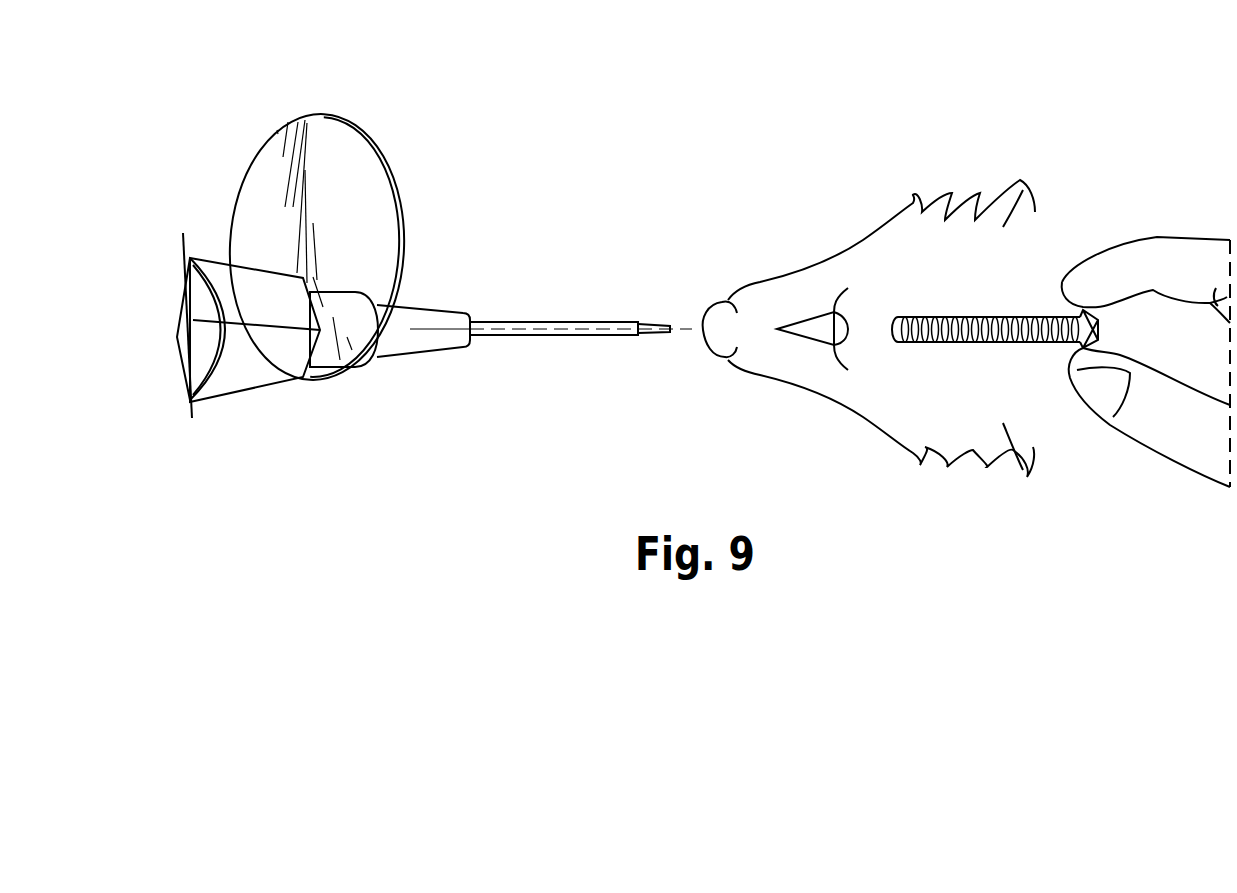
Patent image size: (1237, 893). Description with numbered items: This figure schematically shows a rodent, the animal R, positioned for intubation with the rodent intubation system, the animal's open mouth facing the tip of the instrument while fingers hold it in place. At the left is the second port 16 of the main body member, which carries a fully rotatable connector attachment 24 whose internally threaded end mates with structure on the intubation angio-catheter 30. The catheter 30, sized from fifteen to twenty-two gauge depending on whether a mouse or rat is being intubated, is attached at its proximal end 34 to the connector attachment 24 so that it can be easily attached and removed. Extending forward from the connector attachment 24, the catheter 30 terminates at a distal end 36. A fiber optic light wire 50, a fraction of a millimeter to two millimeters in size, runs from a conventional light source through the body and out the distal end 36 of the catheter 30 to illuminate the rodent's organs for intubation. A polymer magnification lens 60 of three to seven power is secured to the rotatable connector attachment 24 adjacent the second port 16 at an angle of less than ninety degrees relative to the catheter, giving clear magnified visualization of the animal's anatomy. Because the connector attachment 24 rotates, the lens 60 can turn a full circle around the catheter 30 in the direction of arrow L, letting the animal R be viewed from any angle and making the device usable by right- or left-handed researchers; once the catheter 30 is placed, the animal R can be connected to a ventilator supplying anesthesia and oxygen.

The second port 16 is at (432, 299).
The rotatable connector attachment 24 is at (232, 398).
The polymer magnification lens 60 is at (367, 220).
The proximal end 34 is at (360, 367).
The intubation angio-catheter 30 is at (445, 363).
The distal end 36 is at (650, 312).
The fiber optic light wire 50 is at (680, 332).
The arrow L is at (408, 102).
The animal R is at (967, 170).